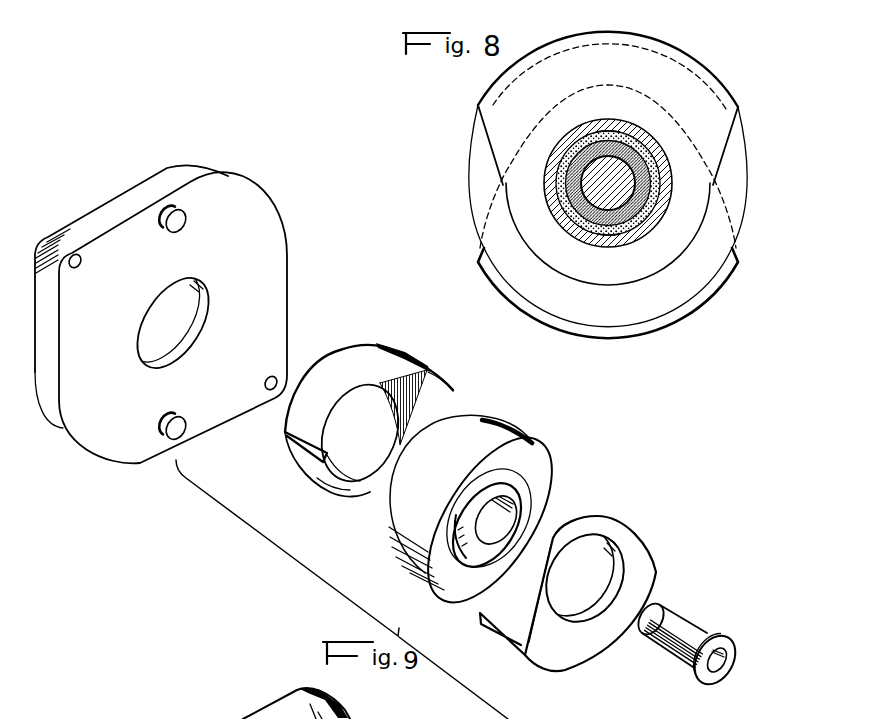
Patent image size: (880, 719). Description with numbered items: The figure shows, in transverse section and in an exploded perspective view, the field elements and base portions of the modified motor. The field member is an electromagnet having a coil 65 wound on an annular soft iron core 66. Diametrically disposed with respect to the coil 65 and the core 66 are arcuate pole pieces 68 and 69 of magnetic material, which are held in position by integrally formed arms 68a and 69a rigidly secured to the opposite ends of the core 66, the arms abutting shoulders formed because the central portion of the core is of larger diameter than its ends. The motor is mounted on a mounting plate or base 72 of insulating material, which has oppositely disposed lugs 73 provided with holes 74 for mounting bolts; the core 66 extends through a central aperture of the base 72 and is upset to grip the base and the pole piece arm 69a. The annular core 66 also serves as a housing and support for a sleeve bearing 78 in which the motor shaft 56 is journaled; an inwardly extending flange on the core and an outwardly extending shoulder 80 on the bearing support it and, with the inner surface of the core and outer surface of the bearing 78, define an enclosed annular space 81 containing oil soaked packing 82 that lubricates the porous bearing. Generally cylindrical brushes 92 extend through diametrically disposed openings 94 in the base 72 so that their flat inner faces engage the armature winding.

In FIG. 8, the motor shaft 56 is at (585, 150).
In FIG. 8, the coil 65 is at (470, 185).
In FIG. 9, the coil 65 is at (391, 541).
In FIG. 8, the annular soft iron core 66 is at (640, 232).
In FIG. 9, the annular soft iron core 66 is at (506, 474).
In FIG. 8, the arcuate pole piece 68 is at (704, 299).
In FIG. 9, the arcuate pole piece 68 is at (504, 645).
In FIG. 8, the arm 68a is at (727, 213).
In FIG. 9, the arm 68a is at (640, 556).
In FIG. 8, the arcuate pole piece 69 is at (648, 37).
In FIG. 9, the arcuate pole piece 69 is at (453, 388).
In FIG. 8, the arm 69a is at (495, 134).
In FIG. 9, the arm 69a is at (313, 472).
In FIG. 9, the mounting plate or base 72 is at (279, 243).
In FIG. 9, the lugs 73 is at (75, 224).
In FIG. 9, the holes 74 is at (78, 270).
In FIG. 8, the sleeve bearing 78 is at (567, 162).
In FIG. 9, the sleeve bearing 78 is at (691, 630).
In FIG. 9, the shoulder 80 is at (727, 640).
In FIG. 8, the annular space 81 is at (612, 229).
In FIG. 8, the oil soaked packing 82 is at (612, 134).
In FIG. 9, the brushes 92 is at (185, 226).
In FIG. 9, the openings 94 is at (180, 213).